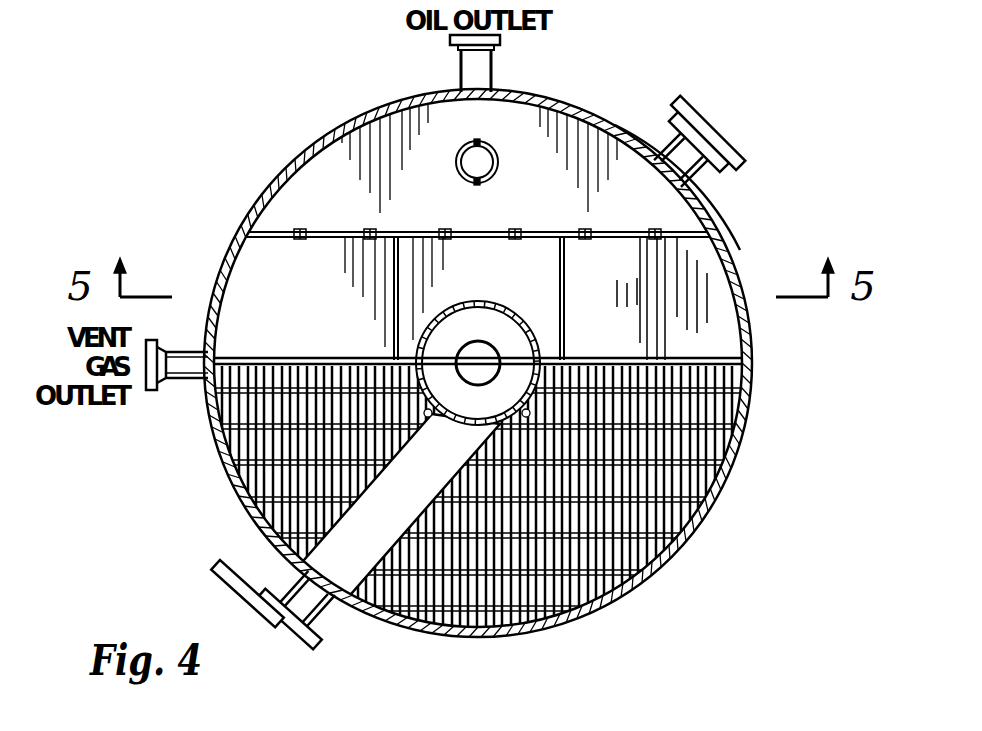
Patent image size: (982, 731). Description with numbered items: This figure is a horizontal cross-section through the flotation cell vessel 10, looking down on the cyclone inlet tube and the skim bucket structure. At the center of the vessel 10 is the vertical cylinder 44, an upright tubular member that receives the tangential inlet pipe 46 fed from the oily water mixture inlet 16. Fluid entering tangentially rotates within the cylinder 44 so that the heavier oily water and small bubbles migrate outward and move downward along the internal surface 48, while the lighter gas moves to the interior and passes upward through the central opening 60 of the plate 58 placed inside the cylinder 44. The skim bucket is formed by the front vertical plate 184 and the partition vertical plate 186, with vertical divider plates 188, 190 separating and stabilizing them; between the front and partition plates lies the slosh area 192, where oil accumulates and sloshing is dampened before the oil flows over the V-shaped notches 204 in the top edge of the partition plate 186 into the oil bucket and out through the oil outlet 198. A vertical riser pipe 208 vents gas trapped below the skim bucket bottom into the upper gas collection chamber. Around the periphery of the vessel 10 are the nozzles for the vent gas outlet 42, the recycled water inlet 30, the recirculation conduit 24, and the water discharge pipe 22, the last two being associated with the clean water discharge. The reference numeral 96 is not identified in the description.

The vessel 10 is at (754, 428).
The oily water mixture inlet 16 is at (300, 632).
The water discharge pipe 22 is at (217, 578).
The recirculation conduit 24 is at (697, 122).
The recycled water inlet 30 is at (722, 166).
The vent gas outlet 42 is at (190, 365).
The vertical cylinder 44 is at (456, 303).
The tangential inlet pipe 46 is at (378, 535).
The internal surface 48 is at (483, 311).
The plate 58 is at (442, 358).
The central opening 60 is at (481, 353).
The upper vapor chamber 96 is at (611, 206).
The front vertical plate 184 is at (598, 358).
The partition vertical plate 186 is at (468, 228).
The vertical divider plate 188 is at (567, 279).
The vertical divider plate 190 is at (392, 283).
The area 192 is at (258, 283).
The oil outlet 198 is at (483, 72).
The V-shaped notches 204 is at (296, 229).
The vertical riser pipe 208 is at (496, 174).